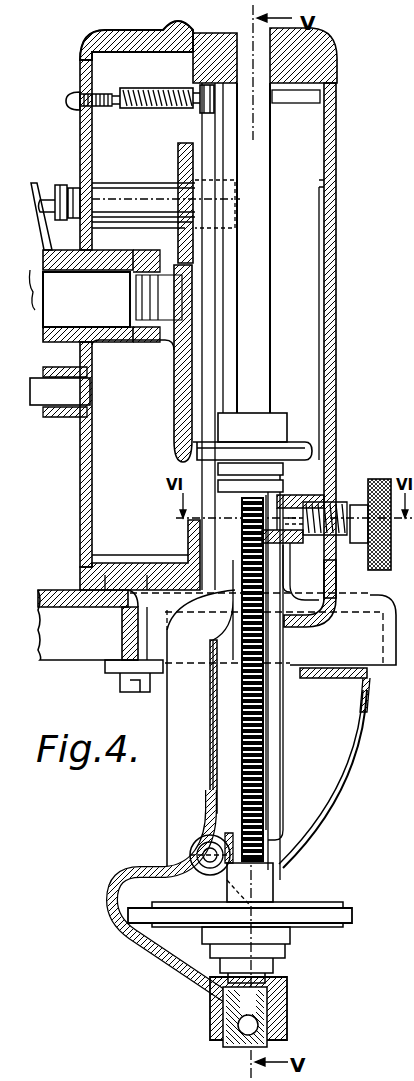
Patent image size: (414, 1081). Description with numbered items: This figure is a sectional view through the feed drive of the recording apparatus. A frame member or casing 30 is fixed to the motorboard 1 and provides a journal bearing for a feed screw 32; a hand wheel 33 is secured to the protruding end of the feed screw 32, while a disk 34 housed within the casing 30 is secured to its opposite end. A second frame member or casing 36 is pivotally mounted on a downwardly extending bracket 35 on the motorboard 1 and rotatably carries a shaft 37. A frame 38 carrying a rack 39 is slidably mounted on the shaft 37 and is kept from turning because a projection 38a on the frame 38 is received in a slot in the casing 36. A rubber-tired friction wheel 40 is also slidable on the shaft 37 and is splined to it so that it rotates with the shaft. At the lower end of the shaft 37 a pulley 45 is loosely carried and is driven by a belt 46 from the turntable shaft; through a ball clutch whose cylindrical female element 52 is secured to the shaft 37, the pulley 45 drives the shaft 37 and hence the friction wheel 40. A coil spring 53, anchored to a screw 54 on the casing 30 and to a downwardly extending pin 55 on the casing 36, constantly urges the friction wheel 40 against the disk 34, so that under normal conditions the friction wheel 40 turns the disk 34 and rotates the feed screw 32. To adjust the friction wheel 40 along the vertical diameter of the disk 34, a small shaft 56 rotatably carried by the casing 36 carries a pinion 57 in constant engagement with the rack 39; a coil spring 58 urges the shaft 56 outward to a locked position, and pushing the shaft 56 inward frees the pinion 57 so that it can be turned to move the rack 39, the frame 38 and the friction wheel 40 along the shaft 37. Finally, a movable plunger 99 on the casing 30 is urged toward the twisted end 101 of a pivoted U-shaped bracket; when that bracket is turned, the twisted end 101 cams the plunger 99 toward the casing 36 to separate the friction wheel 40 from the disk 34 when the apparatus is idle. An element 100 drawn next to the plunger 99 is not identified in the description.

The frame member or casing 30 is at (100, 38).
The second frame member or casing 36 is at (322, 137).
The shaft 37 is at (258, 144).
The screw 54 is at (74, 92).
The coil spring 53 is at (162, 80).
The downwardly extending pin 55 is at (204, 112).
The rod 100 is at (92, 170).
The movable plunger 99 is at (48, 190).
The twisted end 101 is at (33, 182).
The feed screw 32 is at (105, 307).
The hand wheel 33 is at (30, 405).
The disk 34 is at (173, 372).
The rubber-tired friction wheel 40 is at (285, 413).
The projection 38a is at (295, 490).
The pinion 57 is at (255, 522).
The small shaft 56 is at (268, 654).
The coil spring 58 is at (345, 500).
The motorboard 1 is at (388, 604).
The frame 38 is at (283, 702).
The rack 39 is at (265, 742).
The downwardly extending bracket 35 is at (330, 762).
The second pulley 45 is at (340, 902).
The belt 46 is at (352, 916).
The cylindrical female element 52 is at (265, 963).